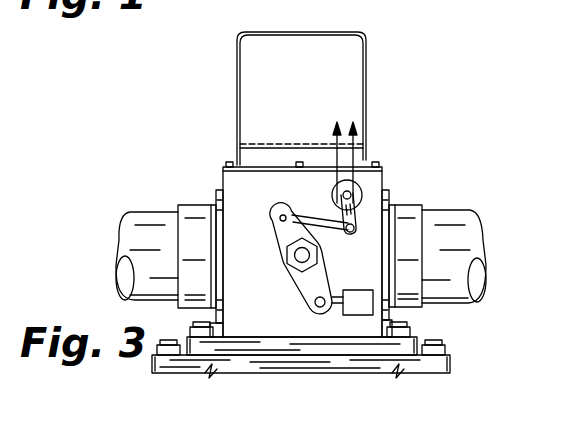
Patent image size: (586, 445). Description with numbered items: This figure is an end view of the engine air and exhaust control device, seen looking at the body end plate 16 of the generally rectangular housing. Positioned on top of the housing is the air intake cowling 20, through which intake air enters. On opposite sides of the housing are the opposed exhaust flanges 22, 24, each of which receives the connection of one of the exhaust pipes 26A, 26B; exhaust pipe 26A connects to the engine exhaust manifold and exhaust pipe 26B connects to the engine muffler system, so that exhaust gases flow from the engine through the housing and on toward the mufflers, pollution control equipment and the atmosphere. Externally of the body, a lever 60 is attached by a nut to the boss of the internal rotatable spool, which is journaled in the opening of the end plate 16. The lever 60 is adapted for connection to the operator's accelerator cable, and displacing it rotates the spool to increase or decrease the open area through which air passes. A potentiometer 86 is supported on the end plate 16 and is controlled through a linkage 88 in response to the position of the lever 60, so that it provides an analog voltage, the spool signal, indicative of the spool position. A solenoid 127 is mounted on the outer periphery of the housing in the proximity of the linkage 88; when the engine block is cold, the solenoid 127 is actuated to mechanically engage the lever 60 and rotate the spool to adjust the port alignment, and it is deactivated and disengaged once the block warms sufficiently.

The end plate 16 is at (368, 180).
The air intake cowling 20 is at (300, 32).
The exhaust flange 22 is at (412, 215).
The exhaust flange 24 is at (203, 218).
The exhaust pipe 26A is at (460, 228).
The exhaust pipe 26B is at (150, 230).
The lever 60 is at (278, 228).
The potentiometer 86 is at (333, 194).
The linkage 88 is at (328, 228).
The solenoid 127 is at (355, 306).